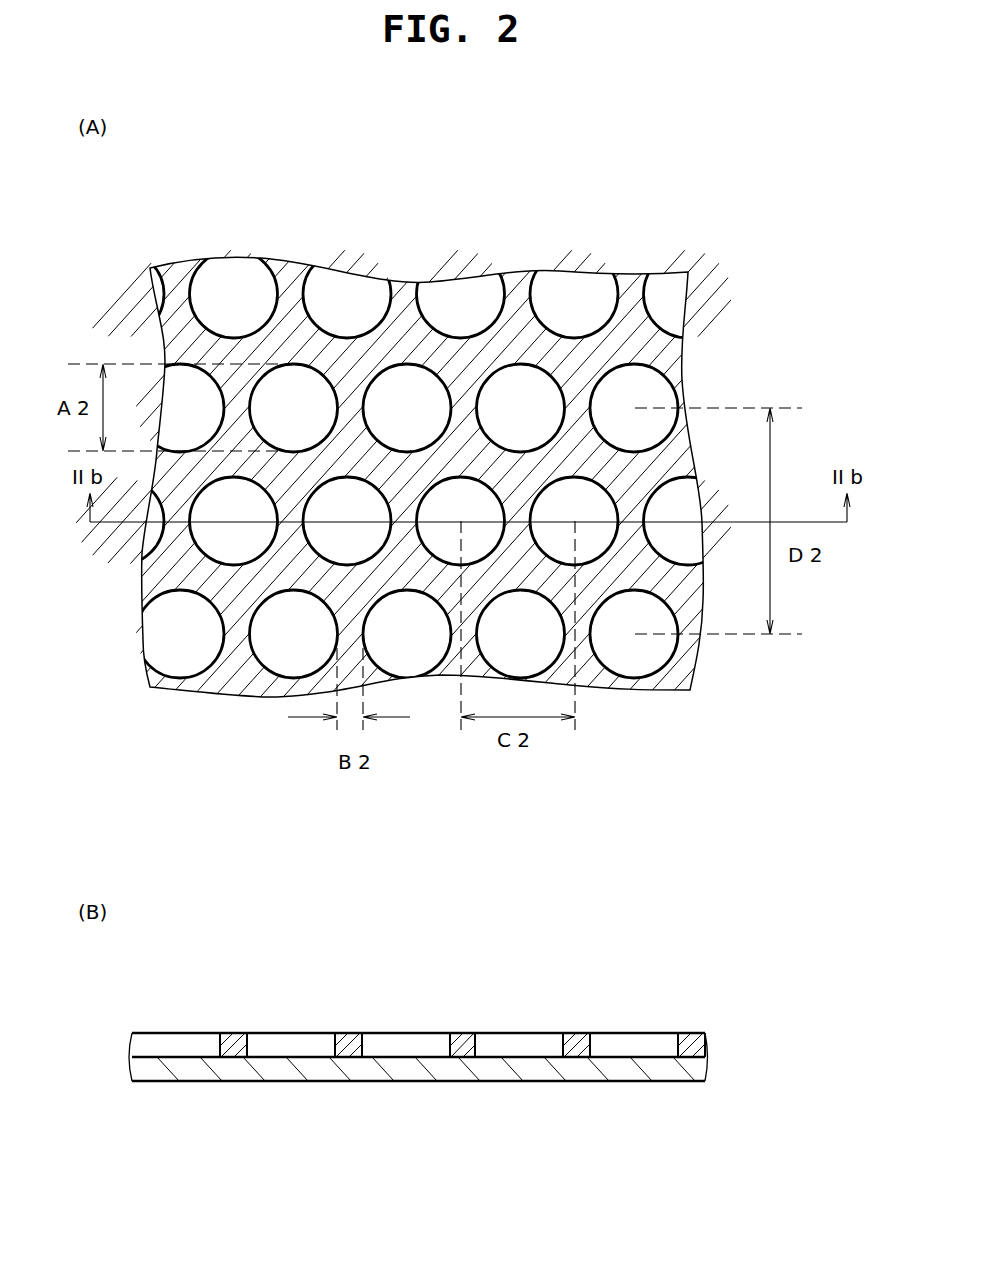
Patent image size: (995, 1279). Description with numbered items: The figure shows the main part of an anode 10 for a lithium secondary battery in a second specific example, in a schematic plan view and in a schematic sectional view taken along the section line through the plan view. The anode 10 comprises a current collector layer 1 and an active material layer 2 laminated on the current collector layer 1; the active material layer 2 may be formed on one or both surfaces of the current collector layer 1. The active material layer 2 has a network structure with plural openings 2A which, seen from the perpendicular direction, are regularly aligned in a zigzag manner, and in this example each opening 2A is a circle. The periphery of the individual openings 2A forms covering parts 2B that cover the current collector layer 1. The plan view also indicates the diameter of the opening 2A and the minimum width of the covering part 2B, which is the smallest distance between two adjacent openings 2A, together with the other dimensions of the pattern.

The anode 10 is at (497, 651).
The active material layer 2 is at (497, 611).
The opening 2A is at (407, 407).
The covering part 2B is at (568, 360).
The current collector layer 1 is at (582, 1072).